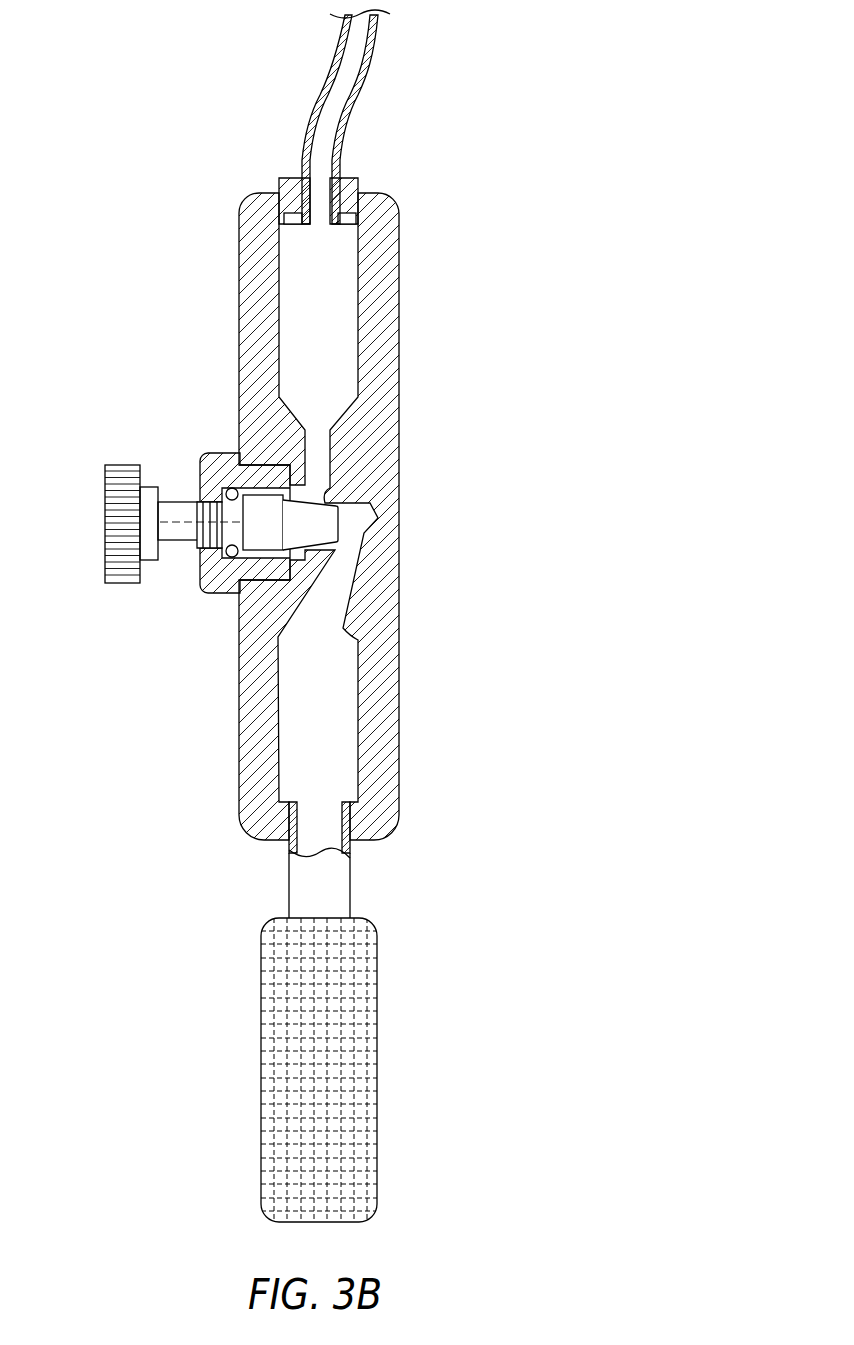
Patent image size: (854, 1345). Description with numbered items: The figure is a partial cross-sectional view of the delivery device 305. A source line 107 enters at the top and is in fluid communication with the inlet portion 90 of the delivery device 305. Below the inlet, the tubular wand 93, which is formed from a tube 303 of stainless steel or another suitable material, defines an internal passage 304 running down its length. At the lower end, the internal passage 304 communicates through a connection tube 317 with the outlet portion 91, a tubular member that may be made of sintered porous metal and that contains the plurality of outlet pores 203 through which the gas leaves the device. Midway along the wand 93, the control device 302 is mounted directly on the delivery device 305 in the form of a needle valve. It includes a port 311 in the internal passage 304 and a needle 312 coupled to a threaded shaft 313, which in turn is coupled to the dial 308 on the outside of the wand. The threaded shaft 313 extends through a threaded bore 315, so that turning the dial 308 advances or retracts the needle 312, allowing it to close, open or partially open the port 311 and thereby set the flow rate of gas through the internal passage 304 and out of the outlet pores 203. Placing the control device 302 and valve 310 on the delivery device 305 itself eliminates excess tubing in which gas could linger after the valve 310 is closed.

The source line 107 is at (343, 70).
The delivery device 305 is at (458, 96).
The inlet portion 90 is at (283, 158).
The internal passage 304 is at (342, 308).
The tubular wand 93 is at (400, 342).
The valve 310 is at (255, 448).
The threaded bore 315 is at (203, 455).
The port 311 is at (321, 465).
The threaded shaft 313 is at (195, 515).
The dial 308 is at (118, 585).
The control device 302 is at (176, 583).
The needle 312 is at (322, 536).
The tube 303 is at (400, 652).
The connection tube 317 is at (350, 889).
The outlet portion 91 is at (399, 1055).
The outlet pores 203 is at (273, 1068).